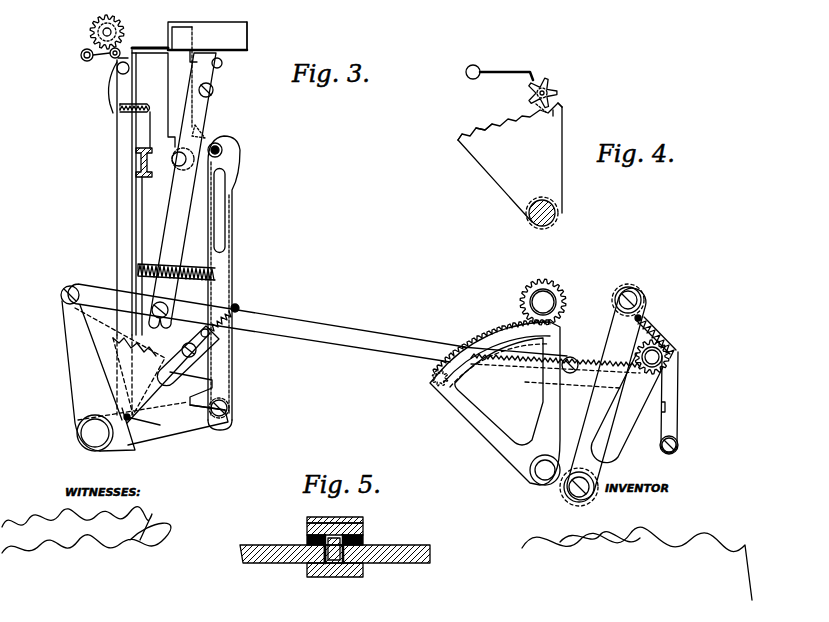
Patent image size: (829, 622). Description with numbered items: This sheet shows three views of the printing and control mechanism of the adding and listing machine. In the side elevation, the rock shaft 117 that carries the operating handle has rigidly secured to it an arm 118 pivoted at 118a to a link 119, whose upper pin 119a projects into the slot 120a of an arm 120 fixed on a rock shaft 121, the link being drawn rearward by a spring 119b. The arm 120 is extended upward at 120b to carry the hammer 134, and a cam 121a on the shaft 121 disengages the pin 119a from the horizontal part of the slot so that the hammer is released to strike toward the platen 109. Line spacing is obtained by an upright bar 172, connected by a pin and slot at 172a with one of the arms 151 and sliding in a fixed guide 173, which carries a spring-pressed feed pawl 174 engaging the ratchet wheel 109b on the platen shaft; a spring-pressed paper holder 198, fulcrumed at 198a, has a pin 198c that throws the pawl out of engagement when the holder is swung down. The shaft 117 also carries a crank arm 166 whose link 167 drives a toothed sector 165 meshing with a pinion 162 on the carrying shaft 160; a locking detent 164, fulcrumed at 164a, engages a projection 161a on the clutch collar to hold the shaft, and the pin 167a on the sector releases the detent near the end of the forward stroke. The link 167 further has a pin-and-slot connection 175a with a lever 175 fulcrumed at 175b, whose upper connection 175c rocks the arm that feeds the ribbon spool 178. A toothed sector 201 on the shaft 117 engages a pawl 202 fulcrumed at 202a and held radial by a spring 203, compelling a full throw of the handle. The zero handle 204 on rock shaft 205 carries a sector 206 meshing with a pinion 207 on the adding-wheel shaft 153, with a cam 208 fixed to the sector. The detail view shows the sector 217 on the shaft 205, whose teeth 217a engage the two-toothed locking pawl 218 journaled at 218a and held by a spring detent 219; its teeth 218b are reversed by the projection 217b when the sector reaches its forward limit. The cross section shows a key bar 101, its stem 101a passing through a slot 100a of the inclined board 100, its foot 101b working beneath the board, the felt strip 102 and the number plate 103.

In FIG. 5, the top or supporting board 100 is at (413, 558).
In FIG. 5, the parallel slots 100a is at (325, 556).
In FIG. 5, the sliding key bar 101 is at (363, 527).
In FIG. 5, the stem or shank 101a is at (323, 577).
In FIG. 5, the foot or base 101b is at (353, 577).
In FIG. 5, the felt strip 102 is at (363, 540).
In FIG. 5, the number plate 103 is at (308, 517).
In FIG. 3, the platen 109 is at (100, 24).
In FIG. 3, the ratchet wheel 109b is at (95, 32).
In FIG. 3, the rock shaft 117 is at (82, 435).
In FIG. 3, the arm 118 is at (203, 420).
In FIG. 3, the pivotal connection 118a is at (229, 405).
In FIG. 3, the link 119 is at (224, 273).
In FIG. 3, the pin 119a is at (224, 146).
In FIG. 3, the spring 119b is at (147, 270).
In FIG. 3, the arm 120 is at (213, 142).
In FIG. 3, the slot 120a is at (237, 160).
In FIG. 3, the upward extension 120b is at (182, 82).
In FIG. 3, the rock shaft 121 is at (171, 164).
In FIG. 3, the cam 121a is at (204, 126).
In FIG. 3, the striker or hammer 134 is at (180, 27).
In FIG. 3, the arm 151 is at (177, 389).
In FIG. 3, the shaft 153 is at (548, 292).
In FIG. 3, the shaft 160 is at (658, 328).
In FIG. 3, the projection 161a is at (670, 365).
In FIG. 3, the pinion 162 is at (637, 342).
In FIG. 3, the locking detent 164 is at (678, 415).
In FIG. 3, the fulcrum 164a is at (678, 445).
In FIG. 3, the toothed sector 165 is at (556, 373).
In FIG. 3, the crank arm 166 is at (75, 337).
In FIG. 3, the link 167 is at (317, 323).
In FIG. 3, the pin 167a is at (577, 392).
In FIG. 3, the upright bar 172 is at (122, 173).
In FIG. 3, the pin-and-slot connection 172a is at (128, 420).
In FIG. 3, the fixed guide 173 is at (136, 148).
In FIG. 3, the feed pawl 174 is at (111, 95).
In FIG. 3, the lever 175 is at (182, 218).
In FIG. 3, the pin-and-slot connection 175a is at (182, 298).
In FIG. 3, the fulcrum 175b is at (213, 86).
In FIG. 3, the pin-and-slot connection 175c is at (222, 62).
In FIG. 3, the ribbon spool 178 is at (247, 28).
In FIG. 3, the holder 198 is at (103, 62).
In FIG. 3, the fulcrum 198a is at (81, 56).
In FIG. 3, the pin 198c is at (121, 48).
In FIG. 3, the toothed sector 201 is at (112, 367).
In FIG. 3, the pawl 202 is at (187, 368).
In FIG. 3, the fulcrum 202a is at (197, 352).
In FIG. 3, the spring 203 is at (239, 308).
In FIG. 3, the zero handle 204 is at (636, 290).
In FIG. 4, the rock shaft 205 is at (559, 219).
In FIG. 3, the sector 206 is at (436, 384).
In FIG. 3, the pinion 207 is at (528, 294).
In FIG. 3, the cam 208 is at (482, 335).
In FIG. 4, the sector 217 is at (510, 162).
In FIG. 4, the teeth 217a is at (500, 112).
In FIG. 4, the projection 217b is at (580, 93).
In FIG. 4, the locking pawl or detent 218 is at (553, 82).
In FIG. 4, the journal 218a is at (527, 124).
In FIG. 4, the teeth 218b is at (560, 110).
In FIG. 4, the spring detent 219 is at (503, 70).